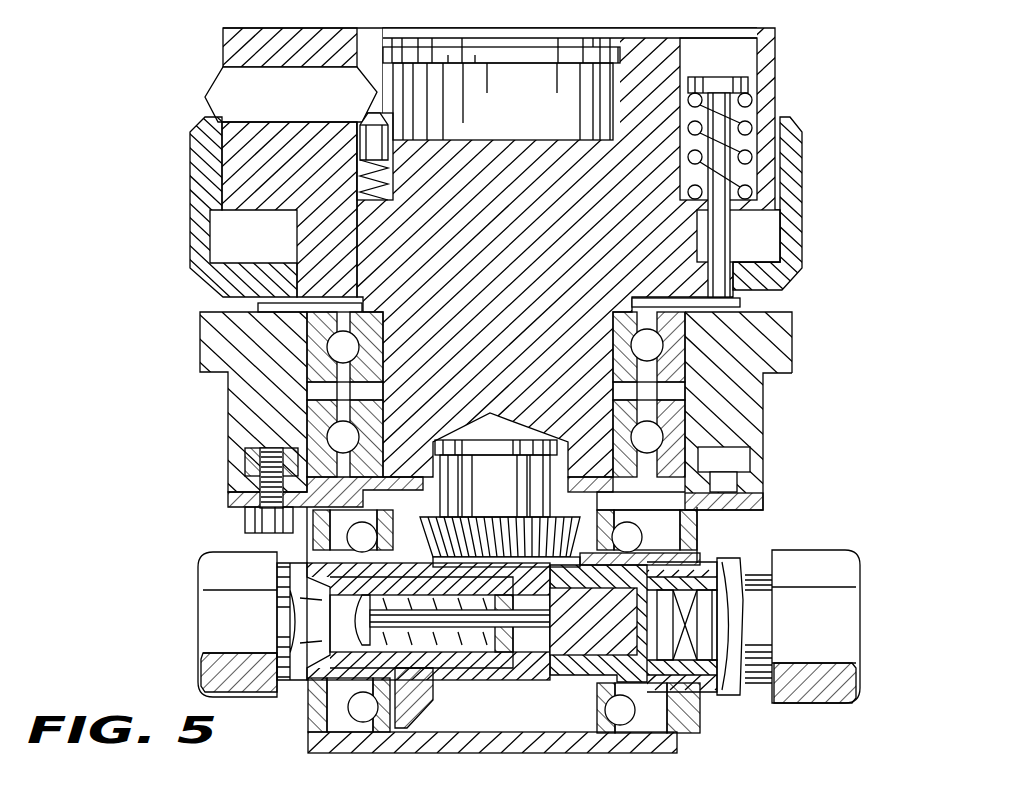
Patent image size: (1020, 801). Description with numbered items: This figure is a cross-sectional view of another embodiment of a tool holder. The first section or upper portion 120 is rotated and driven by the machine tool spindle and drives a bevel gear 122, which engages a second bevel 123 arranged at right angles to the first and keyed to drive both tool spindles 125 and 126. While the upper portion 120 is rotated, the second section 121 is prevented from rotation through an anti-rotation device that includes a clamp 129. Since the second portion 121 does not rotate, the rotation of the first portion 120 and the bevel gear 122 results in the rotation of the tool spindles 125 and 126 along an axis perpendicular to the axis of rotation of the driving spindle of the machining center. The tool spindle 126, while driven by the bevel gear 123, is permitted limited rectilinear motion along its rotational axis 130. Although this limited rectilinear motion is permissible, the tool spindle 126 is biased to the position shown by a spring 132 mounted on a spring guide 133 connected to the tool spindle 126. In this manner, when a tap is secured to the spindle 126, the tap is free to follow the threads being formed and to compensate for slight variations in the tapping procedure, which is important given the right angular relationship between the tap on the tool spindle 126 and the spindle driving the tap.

The first section 120 is at (500, 264).
The second section 121 is at (765, 405).
The bevel gear 122 is at (548, 508).
The second bevel 123 is at (413, 695).
The tool spindle 125 is at (287, 680).
The tool spindle 126 is at (757, 683).
The clamp 129 is at (777, 341).
The rotational axis 130 is at (777, 622).
The spring 132 is at (453, 652).
The spring guide 133 is at (532, 627).